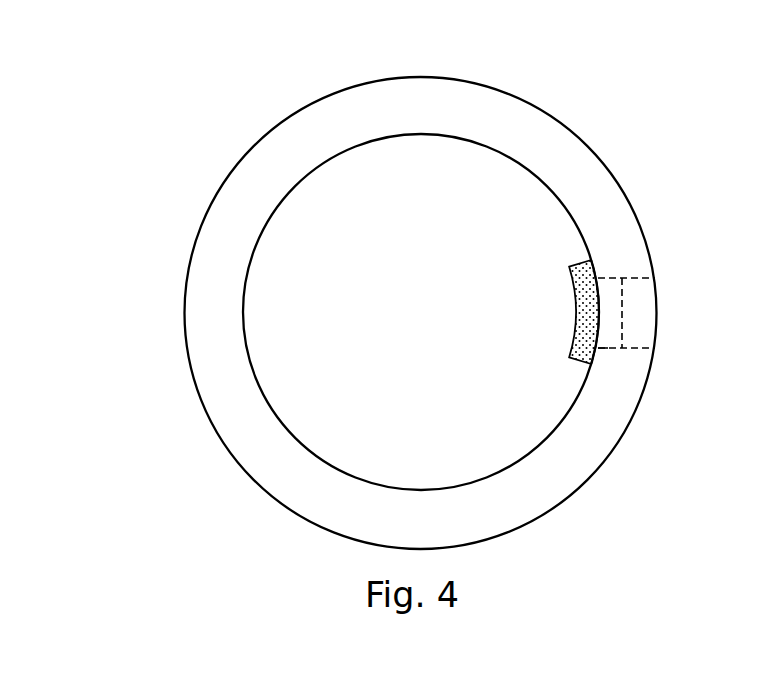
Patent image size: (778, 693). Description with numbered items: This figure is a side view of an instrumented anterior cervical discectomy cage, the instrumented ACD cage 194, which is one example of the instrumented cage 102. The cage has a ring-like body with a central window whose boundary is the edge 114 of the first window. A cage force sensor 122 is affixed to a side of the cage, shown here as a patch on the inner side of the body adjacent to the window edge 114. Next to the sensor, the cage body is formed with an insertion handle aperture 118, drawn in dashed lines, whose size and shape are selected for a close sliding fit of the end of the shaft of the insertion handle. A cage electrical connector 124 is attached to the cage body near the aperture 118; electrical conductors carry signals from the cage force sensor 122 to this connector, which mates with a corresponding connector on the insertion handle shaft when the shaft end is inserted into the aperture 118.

The instrumented cage 102 is at (128, 55).
The instrumented ACD cage 194 is at (570, 127).
The edge of first window 114 is at (247, 280).
The cage force sensor 122 is at (568, 260).
The insertion handle aperture 118 is at (630, 278).
The cage electrical connector 124 is at (608, 350).